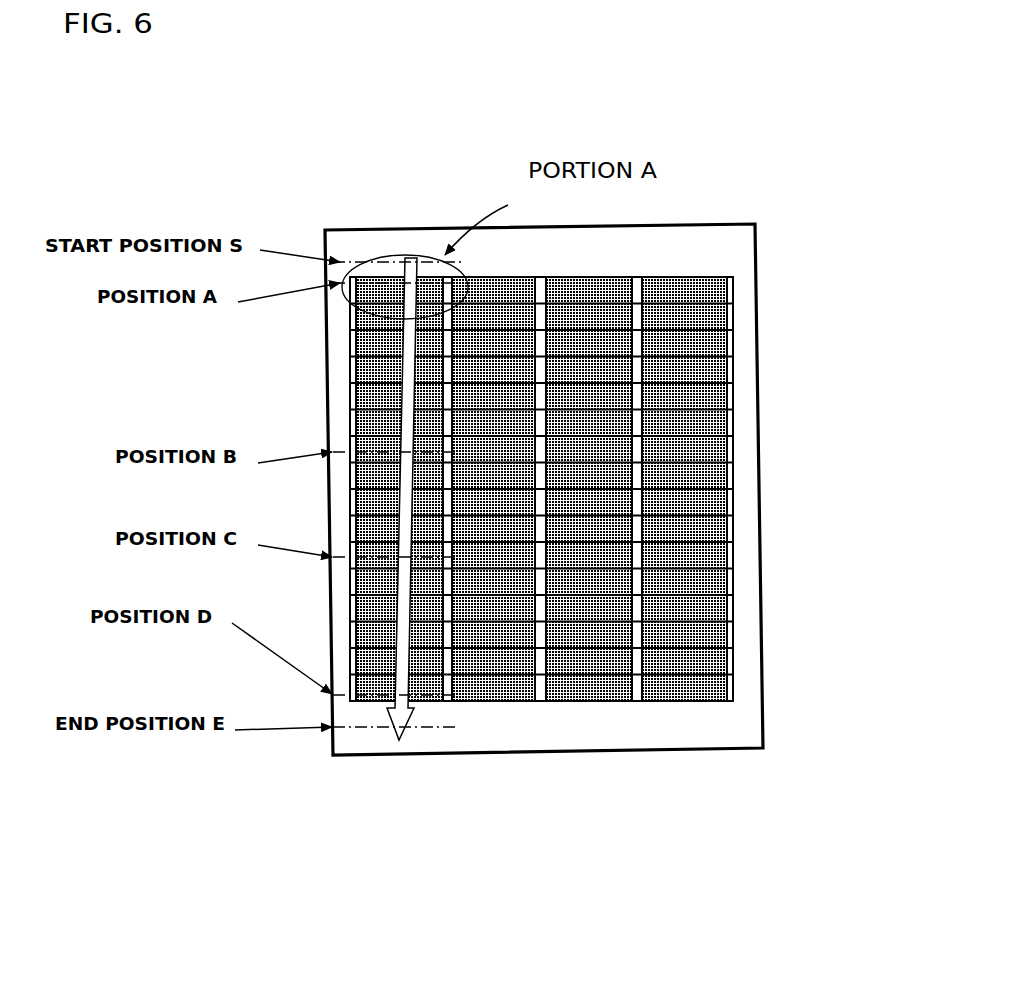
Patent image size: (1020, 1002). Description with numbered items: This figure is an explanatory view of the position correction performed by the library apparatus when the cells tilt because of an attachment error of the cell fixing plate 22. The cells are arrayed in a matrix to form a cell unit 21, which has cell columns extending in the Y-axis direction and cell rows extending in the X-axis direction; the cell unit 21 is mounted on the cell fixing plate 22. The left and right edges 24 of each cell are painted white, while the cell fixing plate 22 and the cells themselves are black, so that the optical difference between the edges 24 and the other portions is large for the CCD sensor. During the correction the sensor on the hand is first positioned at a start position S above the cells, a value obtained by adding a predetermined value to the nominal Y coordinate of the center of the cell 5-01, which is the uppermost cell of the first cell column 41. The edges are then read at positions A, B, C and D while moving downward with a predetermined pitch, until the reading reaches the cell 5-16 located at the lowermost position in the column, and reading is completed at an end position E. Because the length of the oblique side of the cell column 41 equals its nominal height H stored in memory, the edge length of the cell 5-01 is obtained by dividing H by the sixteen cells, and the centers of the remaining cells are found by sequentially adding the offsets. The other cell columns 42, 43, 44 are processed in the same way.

The cell unit 21 is at (539, 543).
The cell fixing plate 22 is at (670, 247).
The edges 24 is at (654, 664).
The cell column 41 is at (345, 543).
The cell column 42 is at (495, 704).
The cell column 43 is at (610, 702).
The cell column 44 is at (672, 702).
The cell 5-01 is at (372, 298).
The cell 5-16 is at (375, 683).